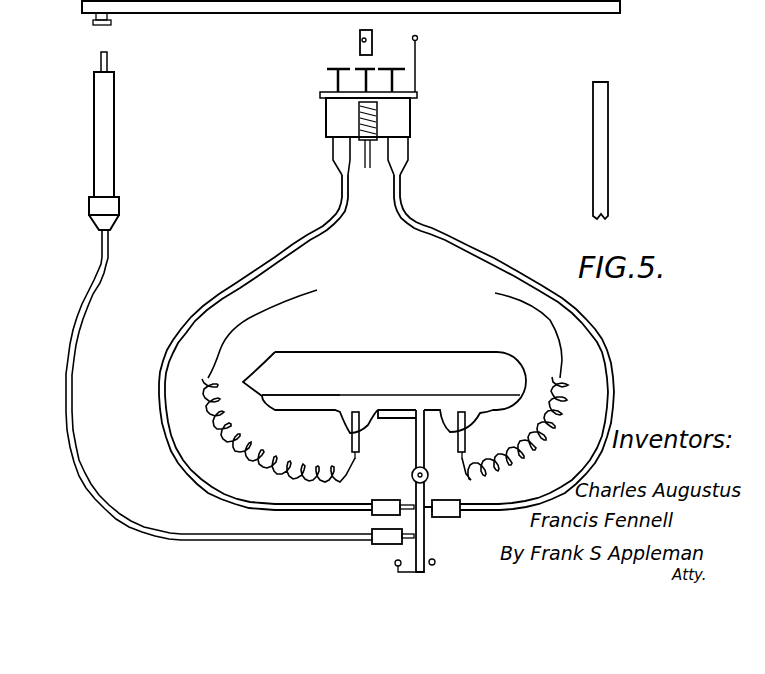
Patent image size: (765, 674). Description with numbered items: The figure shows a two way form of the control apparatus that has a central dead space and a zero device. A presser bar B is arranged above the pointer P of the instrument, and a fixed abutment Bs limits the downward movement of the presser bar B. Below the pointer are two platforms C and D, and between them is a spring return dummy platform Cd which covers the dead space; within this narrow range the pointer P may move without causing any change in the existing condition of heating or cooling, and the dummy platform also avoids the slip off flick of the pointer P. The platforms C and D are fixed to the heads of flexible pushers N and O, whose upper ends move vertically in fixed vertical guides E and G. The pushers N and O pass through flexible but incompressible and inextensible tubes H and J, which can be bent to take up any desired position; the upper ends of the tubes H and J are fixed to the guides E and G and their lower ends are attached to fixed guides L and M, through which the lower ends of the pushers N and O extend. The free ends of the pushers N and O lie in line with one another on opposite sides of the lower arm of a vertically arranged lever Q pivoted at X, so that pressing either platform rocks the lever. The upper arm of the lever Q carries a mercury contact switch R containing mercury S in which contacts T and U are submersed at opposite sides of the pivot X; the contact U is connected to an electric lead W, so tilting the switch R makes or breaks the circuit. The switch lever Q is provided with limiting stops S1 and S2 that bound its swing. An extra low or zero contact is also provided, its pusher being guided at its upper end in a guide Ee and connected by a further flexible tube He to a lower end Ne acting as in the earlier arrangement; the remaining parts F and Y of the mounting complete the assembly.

The presser bar B is at (548, 13).
The platform C is at (108, 60).
The guide Ee is at (114, 112).
The connecting tube He is at (77, 362).
The spring return dummy platform Cd is at (365, 68).
The pointer P is at (362, 41).
The filament support F is at (372, 33).
The platform D is at (390, 69).
The fixed vertical guide E is at (333, 156).
The fixed vertical guide G is at (408, 158).
The fixed abutment Bs is at (593, 135).
The flexible tube H is at (265, 342).
The flexible tube J is at (455, 230).
The coil spring Y is at (300, 303).
The mercury S is at (342, 400).
The mercury contact switch R is at (398, 363).
The electric lead W is at (536, 323).
The contact T is at (352, 436).
The contact U is at (466, 440).
The pivot X is at (416, 468).
The flexible pusher N is at (408, 503).
The fixed guide L is at (372, 505).
The flexible pusher O is at (434, 515).
The fixed guide M is at (460, 512).
The block Ne is at (412, 536).
The limiting stop S1 is at (395, 562).
The lever Q is at (416, 571).
The limiting stop S2 is at (435, 562).